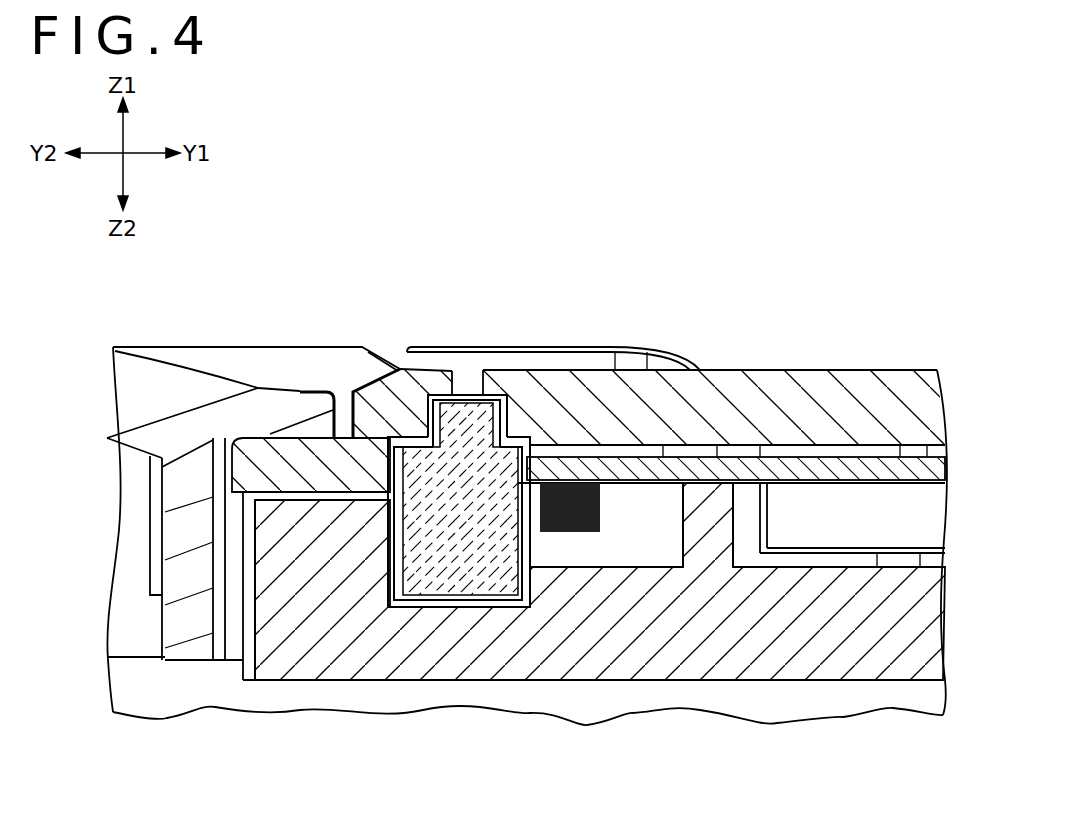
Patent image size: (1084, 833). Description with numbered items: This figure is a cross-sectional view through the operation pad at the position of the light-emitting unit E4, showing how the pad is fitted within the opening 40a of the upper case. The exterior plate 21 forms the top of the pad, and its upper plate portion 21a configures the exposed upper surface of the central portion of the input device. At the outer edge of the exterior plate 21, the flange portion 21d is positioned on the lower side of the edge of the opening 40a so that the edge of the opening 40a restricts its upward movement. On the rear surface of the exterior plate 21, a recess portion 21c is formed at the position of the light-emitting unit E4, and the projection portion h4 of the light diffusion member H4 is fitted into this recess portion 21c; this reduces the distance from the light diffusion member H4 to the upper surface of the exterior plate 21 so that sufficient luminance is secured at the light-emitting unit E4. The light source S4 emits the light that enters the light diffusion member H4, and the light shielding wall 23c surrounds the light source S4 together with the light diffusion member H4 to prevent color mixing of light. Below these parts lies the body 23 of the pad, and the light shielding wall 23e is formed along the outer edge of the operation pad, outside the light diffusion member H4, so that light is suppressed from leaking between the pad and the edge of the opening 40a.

The exterior plate 21 is at (910, 368).
The upper plate portion 21a is at (847, 388).
The recess portion 21c is at (445, 400).
The flange portion 21d is at (260, 455).
The second housing body 23 is at (680, 655).
The light shielding wall 23c is at (722, 525).
The light shielding wall 23e is at (262, 610).
The opening 40a is at (343, 413).
The light-emitting unit E4 is at (472, 378).
The projection portion h4 is at (488, 420).
The light diffusion member H4 is at (447, 577).
The light source S4 is at (598, 524).